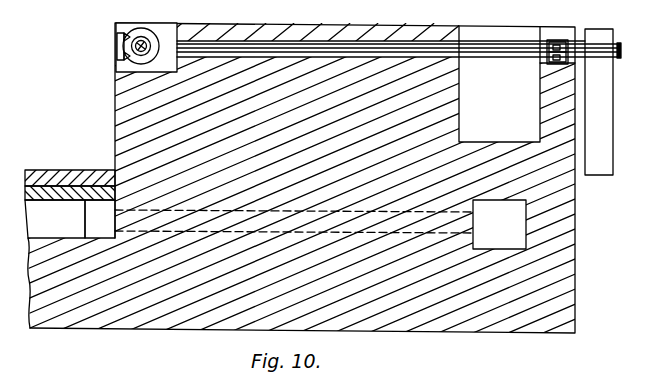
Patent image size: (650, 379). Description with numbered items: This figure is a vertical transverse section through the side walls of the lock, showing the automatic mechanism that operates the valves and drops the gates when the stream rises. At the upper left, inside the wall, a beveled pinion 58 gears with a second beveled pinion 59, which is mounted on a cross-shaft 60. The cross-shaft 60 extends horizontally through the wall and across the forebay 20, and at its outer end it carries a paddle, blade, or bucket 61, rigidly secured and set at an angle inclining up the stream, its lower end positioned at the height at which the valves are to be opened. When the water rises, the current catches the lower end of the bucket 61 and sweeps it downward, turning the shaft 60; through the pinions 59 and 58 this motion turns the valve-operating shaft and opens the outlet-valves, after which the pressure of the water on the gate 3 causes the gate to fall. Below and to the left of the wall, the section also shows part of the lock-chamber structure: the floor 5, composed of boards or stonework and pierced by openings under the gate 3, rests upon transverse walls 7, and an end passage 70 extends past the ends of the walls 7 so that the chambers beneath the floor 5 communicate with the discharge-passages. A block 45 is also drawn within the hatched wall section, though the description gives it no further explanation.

The gate 3 is at (76, 170).
The floor 5 is at (72, 193).
The transverse wall 7 is at (55, 219).
The end passage 70 is at (100, 219).
The beveled pinion 58 is at (146, 47).
The beveled pinion 59 is at (122, 36).
The cross-shaft 60 is at (399, 44).
The forebay 20 is at (499, 84).
The paddle, blade, or bucket 61 is at (599, 102).
The block 45 is at (320, 224).